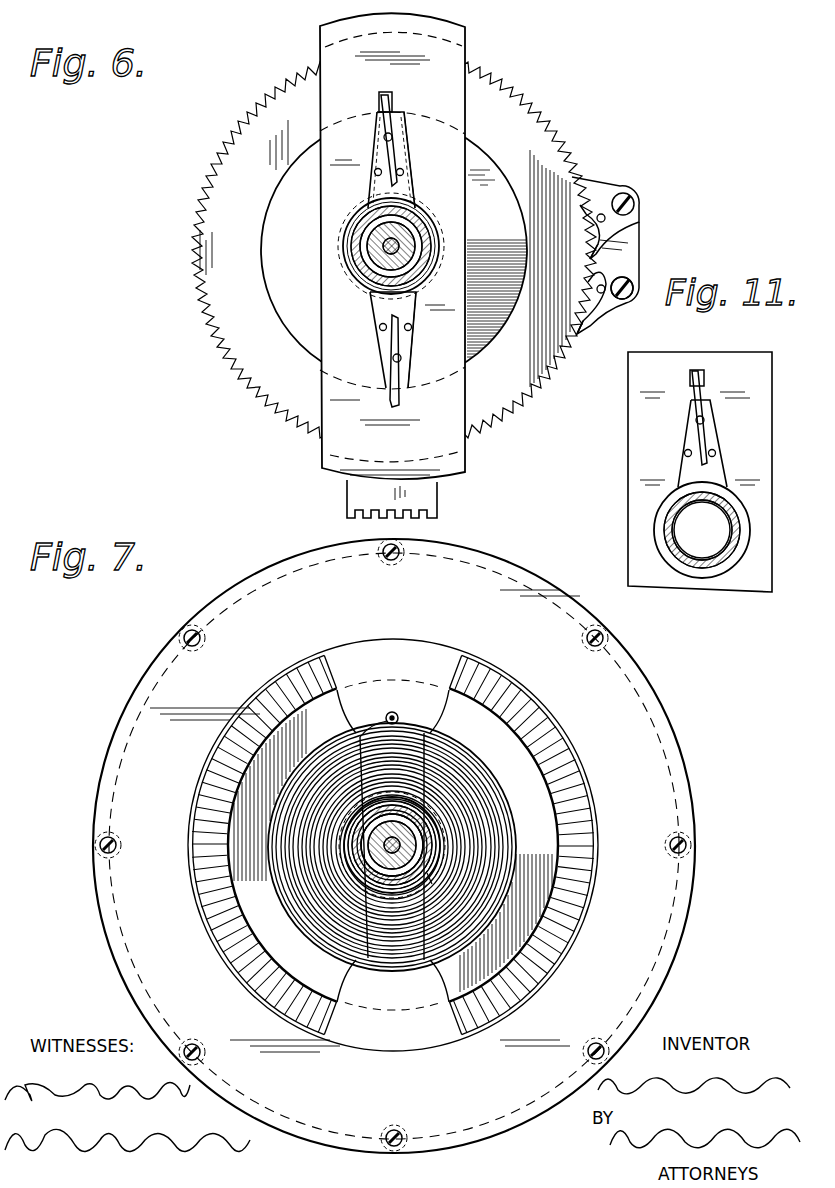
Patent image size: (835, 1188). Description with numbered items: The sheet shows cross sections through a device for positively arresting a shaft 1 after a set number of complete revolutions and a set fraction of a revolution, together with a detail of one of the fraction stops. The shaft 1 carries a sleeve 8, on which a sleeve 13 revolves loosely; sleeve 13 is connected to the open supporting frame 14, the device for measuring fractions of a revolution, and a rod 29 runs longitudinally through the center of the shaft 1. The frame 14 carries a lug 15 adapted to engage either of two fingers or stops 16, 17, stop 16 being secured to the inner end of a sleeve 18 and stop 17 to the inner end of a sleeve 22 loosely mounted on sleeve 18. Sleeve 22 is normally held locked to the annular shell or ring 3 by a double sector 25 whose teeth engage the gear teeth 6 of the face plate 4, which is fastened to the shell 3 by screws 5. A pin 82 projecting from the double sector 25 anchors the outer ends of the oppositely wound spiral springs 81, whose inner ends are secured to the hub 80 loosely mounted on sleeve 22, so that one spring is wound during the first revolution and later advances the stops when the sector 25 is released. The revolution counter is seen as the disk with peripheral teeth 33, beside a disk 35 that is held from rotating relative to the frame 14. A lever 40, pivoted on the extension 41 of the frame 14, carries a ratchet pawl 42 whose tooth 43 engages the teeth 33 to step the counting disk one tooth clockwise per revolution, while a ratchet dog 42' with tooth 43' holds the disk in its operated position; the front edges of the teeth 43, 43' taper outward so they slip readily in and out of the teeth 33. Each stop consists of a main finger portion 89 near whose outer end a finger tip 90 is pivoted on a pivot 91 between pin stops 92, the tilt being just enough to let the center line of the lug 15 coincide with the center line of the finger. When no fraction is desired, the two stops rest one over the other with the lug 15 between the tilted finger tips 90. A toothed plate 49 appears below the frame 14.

In FIG. 6, the shaft 1 is at (386, 248).
In FIG. 7, the shaft 1 is at (418, 850).
In FIG. 7, the annular shell or ring 3 is at (238, 590).
In FIG. 7, the front cover or face plate 4 is at (640, 782).
In FIG. 7, the screws 5 is at (386, 562).
In FIG. 7, the gear teeth 6 is at (545, 742).
In FIG. 6, the sleeve 8 is at (362, 256).
In FIG. 7, the sleeve 8 is at (432, 866).
In FIG. 6, the sleeve 13 is at (348, 265).
In FIG. 7, the sleeve 13 is at (362, 830).
In FIG. 6, the open supporting frame 14 is at (466, 49).
In FIG. 11, the open supporting frame 14 is at (745, 358).
In FIG. 6, the lug 15 is at (393, 98).
In FIG. 11, the lug 15 is at (705, 378).
In FIG. 6, the finger or stop 16 is at (413, 190).
In FIG. 6, the finger or stop 17 is at (416, 303).
In FIG. 11, the sleeve 18 is at (703, 575).
In FIG. 7, the sleeve 18 is at (348, 856).
In FIG. 11, the sleeve 22 is at (725, 565).
In FIG. 7, the sleeve 22 is at (352, 872).
In FIG. 7, the double sector 25 is at (436, 717).
In FIG. 6, the rod 29 is at (378, 240).
In FIG. 7, the rod 29 is at (425, 843).
In FIG. 6, the teeth 33 is at (194, 262).
In FIG. 6, the disk 35 is at (262, 268).
In FIG. 6, the lever 40 is at (598, 192).
In FIG. 6, the extension of the frame 41 is at (628, 243).
In FIG. 6, the ratchet pawl 42 is at (645, 205).
In FIG. 6, the ratchet dog 42' is at (619, 303).
In FIG. 6, the tooth 43 is at (632, 254).
In FIG. 6, the tooth 43' is at (597, 341).
In FIG. 6, the toothed plate 49 is at (438, 500).
In FIG. 7, the sleeve or hub 80 is at (432, 884).
In FIG. 7, the spiral spring 81 is at (406, 847).
In FIG. 7, the pin 82 is at (385, 718).
In FIG. 6, the main finger portion 89 is at (398, 121).
In FIG. 11, the main finger portion 89 is at (714, 403).
In FIG. 6, the finger tip 90 is at (383, 98).
In FIG. 11, the finger tip 90 is at (692, 405).
In FIG. 6, the pivot 91 is at (393, 137).
In FIG. 11, the pivot 91 is at (705, 420).
In FIG. 6, the pin stops 92 is at (374, 173).
In FIG. 11, the pin stops 92 is at (684, 453).